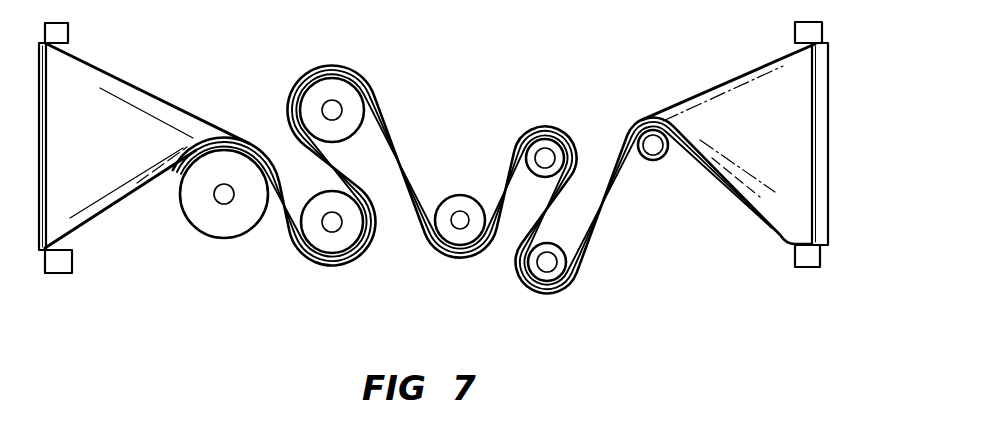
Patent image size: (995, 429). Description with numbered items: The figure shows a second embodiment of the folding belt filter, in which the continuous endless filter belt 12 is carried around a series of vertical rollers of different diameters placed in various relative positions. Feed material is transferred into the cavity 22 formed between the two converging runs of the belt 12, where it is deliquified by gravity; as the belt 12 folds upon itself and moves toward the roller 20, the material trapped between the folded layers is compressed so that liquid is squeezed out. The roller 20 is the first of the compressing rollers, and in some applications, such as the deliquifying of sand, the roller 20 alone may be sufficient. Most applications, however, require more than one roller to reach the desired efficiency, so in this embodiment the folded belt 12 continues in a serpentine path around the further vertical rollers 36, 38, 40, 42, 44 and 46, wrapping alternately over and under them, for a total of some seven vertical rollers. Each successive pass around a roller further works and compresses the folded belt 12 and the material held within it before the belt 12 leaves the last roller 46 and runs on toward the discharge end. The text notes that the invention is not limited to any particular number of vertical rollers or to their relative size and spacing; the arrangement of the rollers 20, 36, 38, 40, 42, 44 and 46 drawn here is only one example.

The filter belt 12 is at (800, 130).
The roller 20 is at (225, 213).
The cavity 22 is at (150, 137).
The roller 36 is at (330, 242).
The roller 38 is at (353, 120).
The roller 40 is at (452, 242).
The roller 42 is at (562, 136).
The roller 44 is at (570, 270).
The roller 46 is at (658, 162).